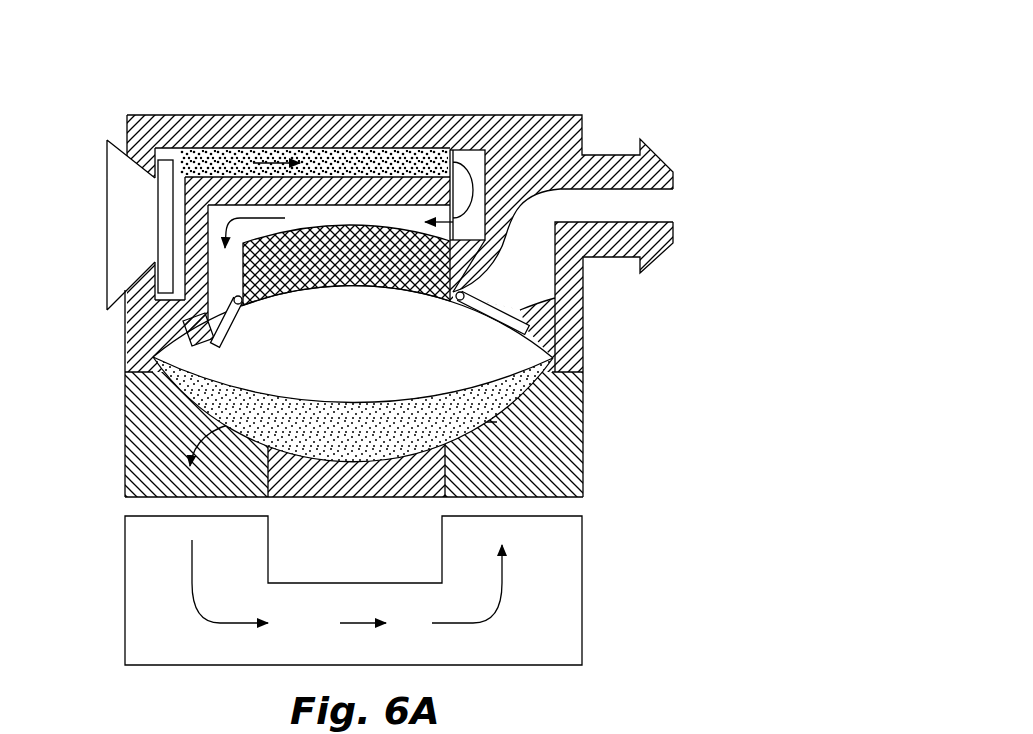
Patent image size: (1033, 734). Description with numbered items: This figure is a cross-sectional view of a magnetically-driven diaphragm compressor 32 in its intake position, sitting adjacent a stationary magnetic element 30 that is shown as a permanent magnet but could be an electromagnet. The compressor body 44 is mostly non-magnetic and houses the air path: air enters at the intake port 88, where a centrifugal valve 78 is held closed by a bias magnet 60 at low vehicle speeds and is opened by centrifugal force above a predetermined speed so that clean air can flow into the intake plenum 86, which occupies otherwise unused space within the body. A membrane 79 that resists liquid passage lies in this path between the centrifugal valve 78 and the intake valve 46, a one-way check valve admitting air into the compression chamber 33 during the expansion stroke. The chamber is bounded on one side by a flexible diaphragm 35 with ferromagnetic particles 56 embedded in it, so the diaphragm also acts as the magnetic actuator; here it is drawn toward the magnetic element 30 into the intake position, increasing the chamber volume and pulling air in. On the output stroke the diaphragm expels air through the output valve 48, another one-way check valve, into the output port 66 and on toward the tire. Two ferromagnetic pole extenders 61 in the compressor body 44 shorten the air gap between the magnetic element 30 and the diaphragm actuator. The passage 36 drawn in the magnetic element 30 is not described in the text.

The magnetic element 30 is at (567, 595).
The compressor 32 is at (548, 83).
The compression chamber 33 is at (210, 403).
The flexible diaphragm 35 is at (327, 386).
The channel 36 is at (192, 583).
The compressor body 44 is at (563, 115).
The intake valve 46 is at (203, 337).
The output valve 48 is at (520, 300).
The ferromagnetic particles 56 is at (240, 368).
The bias magnet 60 is at (355, 228).
The ferromagnetic pole extenders 61 is at (567, 460).
The output port 66 is at (663, 208).
The centrifugal valve 78 is at (117, 243).
The membrane 79 is at (468, 160).
The intake plenum 86 is at (273, 163).
The intake port 88 is at (123, 143).